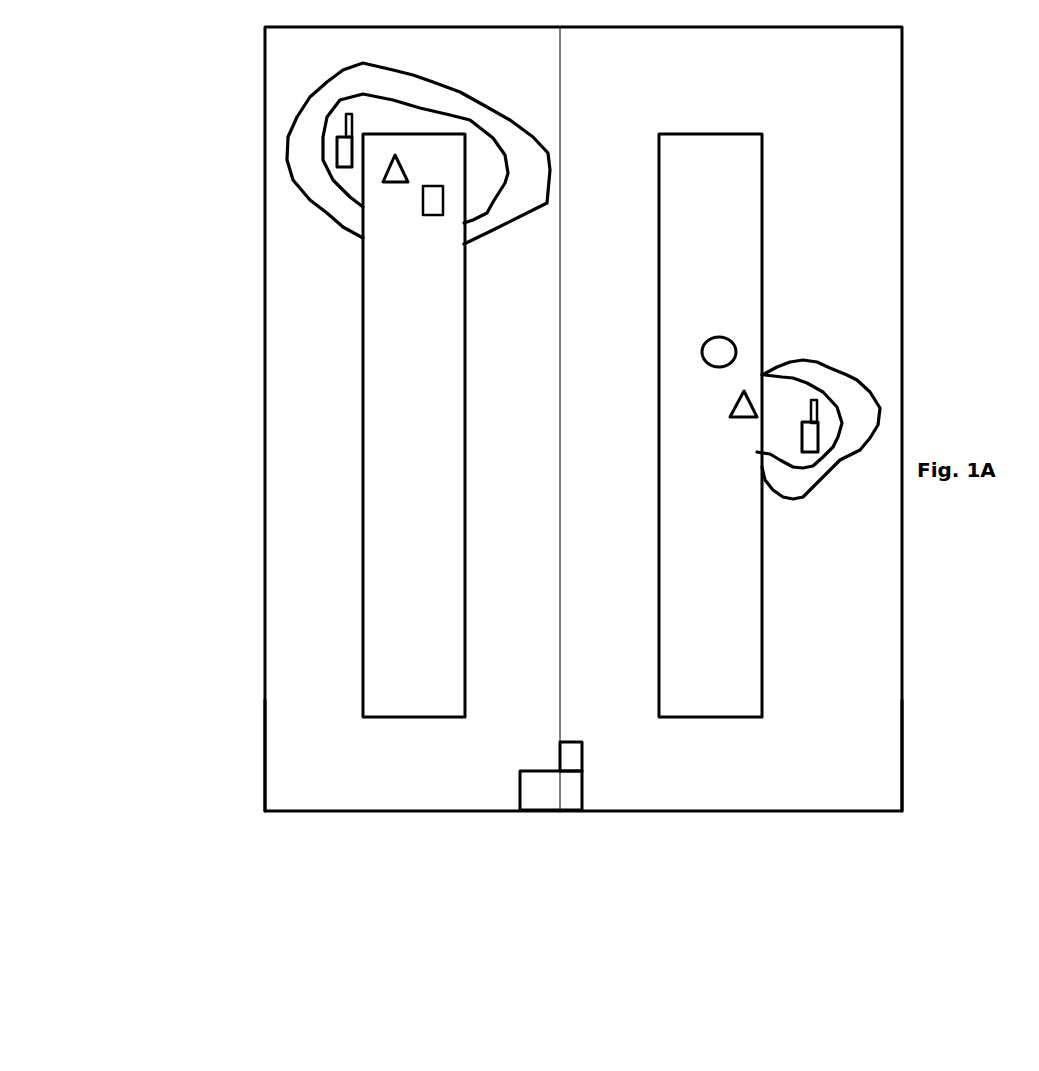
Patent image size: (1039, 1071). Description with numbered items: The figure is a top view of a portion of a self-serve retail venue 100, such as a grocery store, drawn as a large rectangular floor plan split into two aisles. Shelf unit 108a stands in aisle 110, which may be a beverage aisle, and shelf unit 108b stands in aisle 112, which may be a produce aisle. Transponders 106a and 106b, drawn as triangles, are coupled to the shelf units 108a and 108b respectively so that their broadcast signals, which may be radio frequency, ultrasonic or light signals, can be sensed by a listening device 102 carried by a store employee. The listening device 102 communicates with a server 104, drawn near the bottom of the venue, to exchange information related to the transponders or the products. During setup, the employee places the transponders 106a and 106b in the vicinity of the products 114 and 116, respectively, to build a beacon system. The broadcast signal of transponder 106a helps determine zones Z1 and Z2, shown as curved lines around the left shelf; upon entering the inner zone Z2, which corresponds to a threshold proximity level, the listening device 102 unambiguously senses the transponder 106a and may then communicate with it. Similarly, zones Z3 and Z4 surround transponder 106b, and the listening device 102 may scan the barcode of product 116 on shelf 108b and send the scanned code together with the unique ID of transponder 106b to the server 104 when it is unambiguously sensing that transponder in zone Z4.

The self-serve retail venue 100 is at (263, 256).
The listening device 102 is at (577, 278).
The server 104 is at (570, 776).
The transponder 106a is at (390, 182).
The transponder 106b is at (718, 404).
The shelf unit 108a is at (372, 364).
The shelf unit 108b is at (660, 383).
The aisle 110 is at (293, 737).
The aisle 112 is at (865, 765).
The product 114 is at (436, 213).
The product 116 is at (719, 343).
The zone Z1 is at (418, 153).
The zone Z2 is at (415, 158).
The zone Z3 is at (821, 429).
The zone Z4 is at (799, 421).